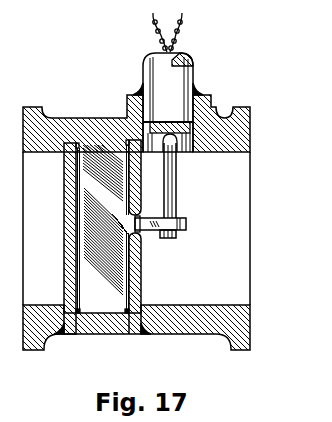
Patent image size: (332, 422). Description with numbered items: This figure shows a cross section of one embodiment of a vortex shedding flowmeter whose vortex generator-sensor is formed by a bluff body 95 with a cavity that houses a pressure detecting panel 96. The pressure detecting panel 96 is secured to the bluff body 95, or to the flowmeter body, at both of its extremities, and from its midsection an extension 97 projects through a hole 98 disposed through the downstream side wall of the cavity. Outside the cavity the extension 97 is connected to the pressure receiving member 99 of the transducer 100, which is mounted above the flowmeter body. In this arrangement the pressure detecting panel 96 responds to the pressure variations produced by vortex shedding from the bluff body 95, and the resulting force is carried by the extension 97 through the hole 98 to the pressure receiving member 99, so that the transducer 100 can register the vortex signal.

The bluff body 95 is at (143, 272).
The pressure detecting panel 96 is at (100, 232).
The extension 97 is at (178, 241).
The hole 98 is at (160, 252).
The pressure receiving member 99 is at (173, 190).
The transducer 100 is at (172, 77).